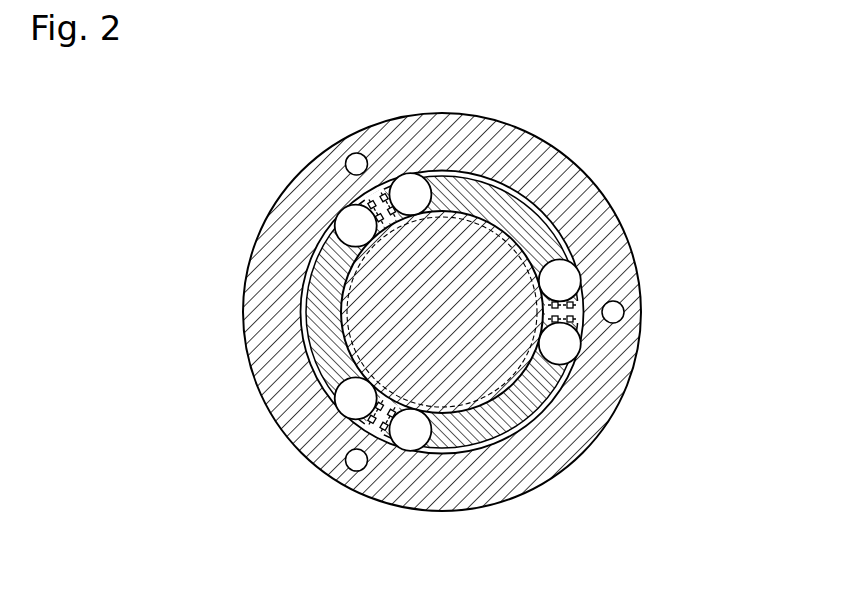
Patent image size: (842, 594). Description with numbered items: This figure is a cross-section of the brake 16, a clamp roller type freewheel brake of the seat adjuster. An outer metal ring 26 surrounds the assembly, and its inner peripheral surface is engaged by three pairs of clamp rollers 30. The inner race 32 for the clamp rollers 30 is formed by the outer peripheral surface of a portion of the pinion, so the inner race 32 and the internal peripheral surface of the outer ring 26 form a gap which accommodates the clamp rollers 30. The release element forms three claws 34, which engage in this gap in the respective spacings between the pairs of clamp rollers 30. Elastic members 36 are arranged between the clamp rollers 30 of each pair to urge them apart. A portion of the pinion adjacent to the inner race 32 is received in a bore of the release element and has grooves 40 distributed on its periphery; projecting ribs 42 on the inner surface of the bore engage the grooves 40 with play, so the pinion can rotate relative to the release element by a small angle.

The brake 16 is at (163, 250).
The outer ring 26 is at (593, 200).
The clamp rollers 30 is at (567, 345).
The inner race 32 is at (492, 218).
The claws 34 is at (497, 427).
The elastic members 36 is at (382, 427).
The grooves 40 is at (325, 345).
The projecting ribs 42 is at (303, 310).